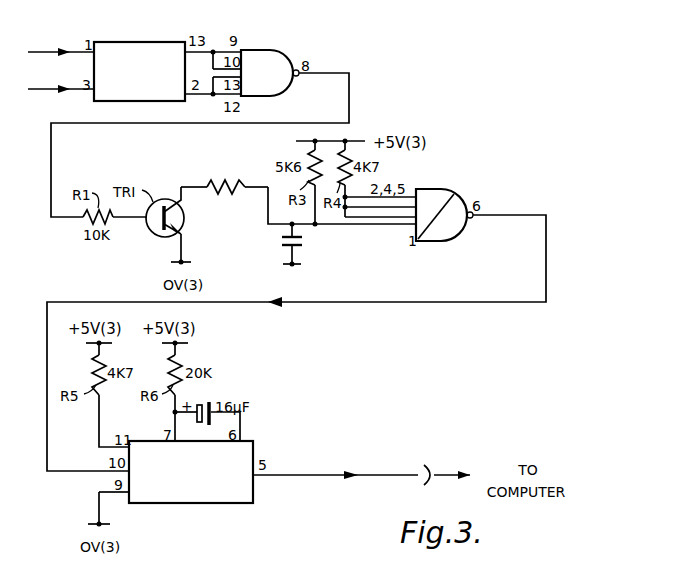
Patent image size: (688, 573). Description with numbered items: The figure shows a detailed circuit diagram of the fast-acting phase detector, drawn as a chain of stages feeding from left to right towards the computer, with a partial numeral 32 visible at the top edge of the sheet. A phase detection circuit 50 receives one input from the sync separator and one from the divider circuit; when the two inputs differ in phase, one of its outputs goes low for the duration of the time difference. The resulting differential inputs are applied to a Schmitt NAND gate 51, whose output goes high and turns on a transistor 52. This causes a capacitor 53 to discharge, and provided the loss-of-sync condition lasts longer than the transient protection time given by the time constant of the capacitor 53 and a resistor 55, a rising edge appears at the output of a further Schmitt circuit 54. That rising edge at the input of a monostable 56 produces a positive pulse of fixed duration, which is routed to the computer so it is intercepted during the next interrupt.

The circuit (partial numeral) 32 is at (506, 6).
The phase detection circuit 50 is at (131, 42).
The Schmitt NAND gate 51 is at (272, 48).
The transistor 52 is at (166, 240).
The capacitor 53 is at (282, 250).
The further Schmitt circuit 54 is at (447, 190).
The resistor 55 is at (222, 183).
The monostable 56 is at (222, 503).